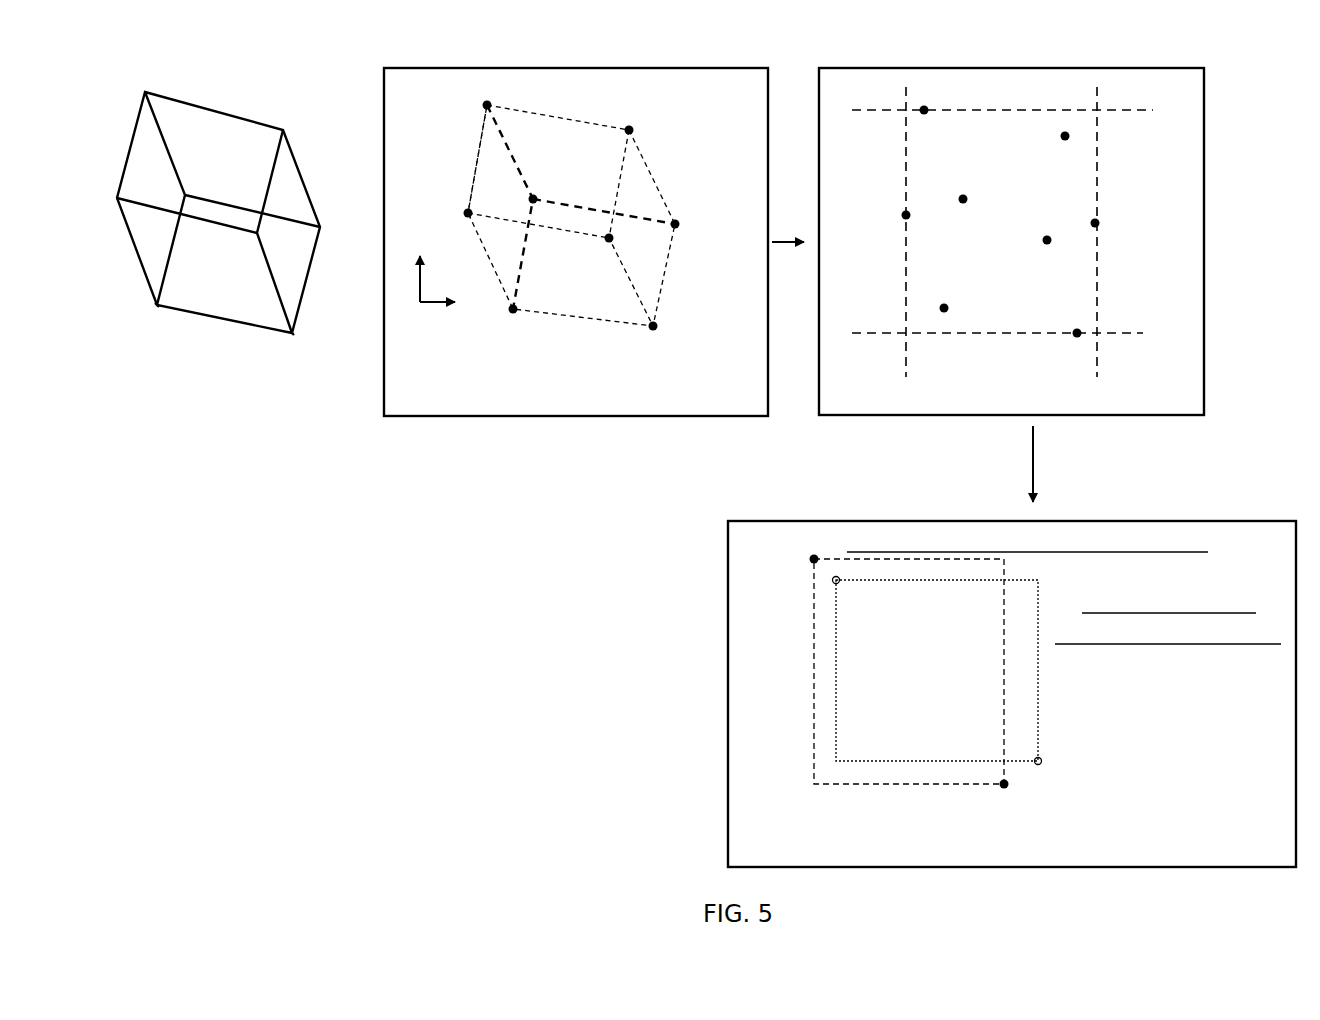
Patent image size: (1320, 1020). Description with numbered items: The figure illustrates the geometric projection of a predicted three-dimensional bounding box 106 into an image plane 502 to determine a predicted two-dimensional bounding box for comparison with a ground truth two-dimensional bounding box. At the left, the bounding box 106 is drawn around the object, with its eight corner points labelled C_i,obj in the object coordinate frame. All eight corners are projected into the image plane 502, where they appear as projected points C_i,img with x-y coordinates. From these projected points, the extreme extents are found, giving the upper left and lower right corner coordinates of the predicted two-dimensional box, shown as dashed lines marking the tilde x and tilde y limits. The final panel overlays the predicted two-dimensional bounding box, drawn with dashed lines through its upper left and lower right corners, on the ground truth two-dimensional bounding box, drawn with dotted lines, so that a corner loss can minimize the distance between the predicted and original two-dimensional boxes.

The bounding box 106 is at (283, 130).
The image plane 502 is at (840, 436).